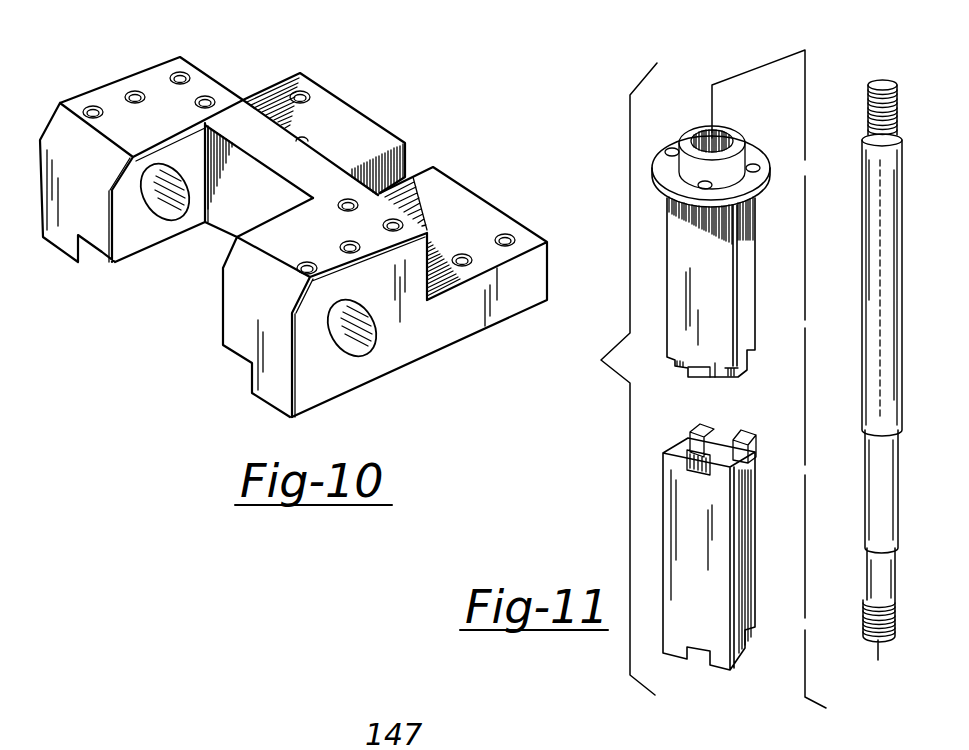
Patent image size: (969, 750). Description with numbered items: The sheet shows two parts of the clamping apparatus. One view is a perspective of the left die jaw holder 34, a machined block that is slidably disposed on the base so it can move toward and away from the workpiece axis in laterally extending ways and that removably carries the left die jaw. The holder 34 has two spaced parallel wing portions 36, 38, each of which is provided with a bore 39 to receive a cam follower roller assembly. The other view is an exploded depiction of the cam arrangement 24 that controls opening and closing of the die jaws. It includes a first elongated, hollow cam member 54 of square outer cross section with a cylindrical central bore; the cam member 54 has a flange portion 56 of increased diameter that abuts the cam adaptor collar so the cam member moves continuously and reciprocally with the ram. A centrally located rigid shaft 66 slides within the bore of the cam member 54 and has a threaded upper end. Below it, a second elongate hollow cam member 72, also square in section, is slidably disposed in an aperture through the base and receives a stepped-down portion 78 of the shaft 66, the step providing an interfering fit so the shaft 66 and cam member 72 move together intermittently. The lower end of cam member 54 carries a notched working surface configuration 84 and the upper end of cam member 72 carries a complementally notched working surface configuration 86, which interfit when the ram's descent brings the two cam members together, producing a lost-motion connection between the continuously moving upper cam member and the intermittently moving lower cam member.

In FIG. 11, the cam arrangement 24 is at (612, 168).
In FIG. 10, the left die jaw holder 34 is at (412, 352).
In FIG. 10, the wing portion 36 is at (152, 80).
In FIG. 10, the wing portion 38 is at (240, 315).
In FIG. 10, the bore 39 is at (180, 198).
In FIG. 11, the first cam member 54 is at (745, 288).
In FIG. 11, the flange portion 56 is at (770, 182).
In FIG. 11, the shaft 66 is at (890, 270).
In FIG. 11, the second cam member 72 is at (707, 620).
In FIG. 11, the stepped-down portion 78 is at (885, 492).
In FIG. 11, the notched working surface configuration 84 is at (700, 380).
In FIG. 11, the complementally notched working surface configuration 86 is at (678, 445).